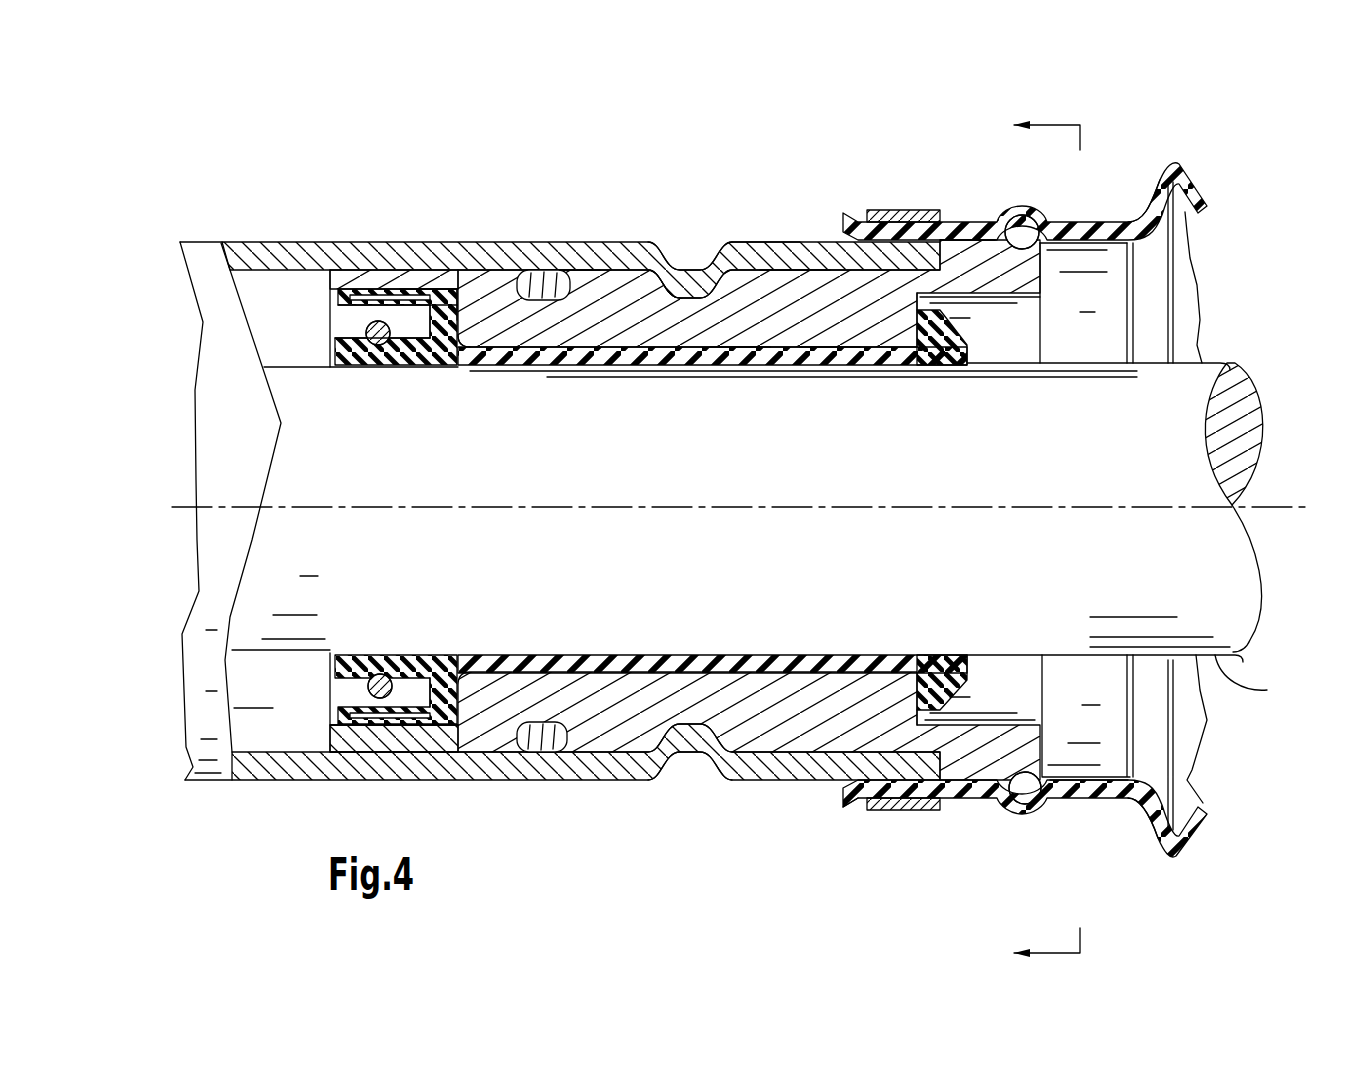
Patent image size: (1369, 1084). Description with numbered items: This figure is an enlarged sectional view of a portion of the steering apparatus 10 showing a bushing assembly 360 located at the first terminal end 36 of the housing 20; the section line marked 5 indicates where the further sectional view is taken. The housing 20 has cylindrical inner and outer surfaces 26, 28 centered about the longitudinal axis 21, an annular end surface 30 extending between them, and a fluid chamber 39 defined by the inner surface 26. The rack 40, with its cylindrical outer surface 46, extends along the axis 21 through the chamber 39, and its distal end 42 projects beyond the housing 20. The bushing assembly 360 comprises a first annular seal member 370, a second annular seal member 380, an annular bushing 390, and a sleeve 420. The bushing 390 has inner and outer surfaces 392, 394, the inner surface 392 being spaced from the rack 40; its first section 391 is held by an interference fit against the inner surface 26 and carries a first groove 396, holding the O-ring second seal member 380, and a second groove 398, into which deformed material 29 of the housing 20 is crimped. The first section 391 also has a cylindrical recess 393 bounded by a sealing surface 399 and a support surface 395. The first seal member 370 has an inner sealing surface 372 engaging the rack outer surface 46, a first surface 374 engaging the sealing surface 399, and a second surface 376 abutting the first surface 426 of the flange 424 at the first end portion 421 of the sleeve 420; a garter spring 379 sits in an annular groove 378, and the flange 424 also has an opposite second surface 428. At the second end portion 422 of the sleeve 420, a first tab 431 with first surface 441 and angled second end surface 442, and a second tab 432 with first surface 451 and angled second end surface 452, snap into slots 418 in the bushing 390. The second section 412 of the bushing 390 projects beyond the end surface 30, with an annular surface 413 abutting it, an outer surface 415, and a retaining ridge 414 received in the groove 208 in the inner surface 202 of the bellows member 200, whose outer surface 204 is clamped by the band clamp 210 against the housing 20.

The steering apparatus 10 is at (236, 190).
The housing 20 is at (272, 256).
The longitudinal axis 21 is at (1268, 505).
The inner surface 26 is at (258, 272).
The outer surface 28 is at (258, 268).
The deformed material 29 is at (688, 252).
The end surface 30 is at (958, 222).
The first terminal end 36 is at (753, 232).
The fluid chamber 39 is at (273, 708).
The rack 40 is at (1180, 440).
The distal end 42 is at (1182, 352).
The outer surface 46 is at (1263, 676).
The bellows member 200 is at (1180, 162).
The inner surface 202 is at (1140, 812).
The outer surface 204 is at (1075, 795).
The groove 208 is at (990, 232).
The band clamp 210 is at (868, 800).
The bushing assembly 360 is at (672, 222).
The first annular seal member 370 is at (372, 652).
The inner sealing surface 372 is at (357, 366).
The first surface 374 is at (375, 284).
The second surface 376 is at (444, 690).
The annular groove 378 is at (379, 347).
The garter spring 379 is at (365, 342).
The second annular seal member 380 is at (540, 280).
The bushing 390 is at (787, 258).
The first section 391 is at (567, 350).
The inner surface 392 is at (745, 353).
The cylindrical recess 393 is at (447, 293).
The outer surface 394 is at (833, 275).
The support surface 395 is at (427, 352).
The first groove 396 is at (577, 282).
The second groove 398 is at (735, 330).
The sealing surface 399 is at (365, 322).
The second section 412 is at (1043, 303).
The annular surface 413 is at (910, 210).
The retaining ridge 414 is at (1030, 808).
The outer surface 415 is at (960, 805).
The slots 418 is at (1025, 343).
The sleeve 420 is at (623, 338).
The first end portion 421 is at (457, 370).
The second end portion 422 is at (942, 364).
The flange 424 is at (448, 714).
The first surface 426 is at (410, 292).
The second surface 428 is at (437, 300).
The first tab 431 is at (920, 347).
The second tab 432 is at (942, 653).
The first surface 441 is at (877, 252).
The second end surface 442 is at (958, 307).
The first surface 451 is at (917, 692).
The second end surface 452 is at (940, 673).
The section line 5- 5 is at (1035, 540).